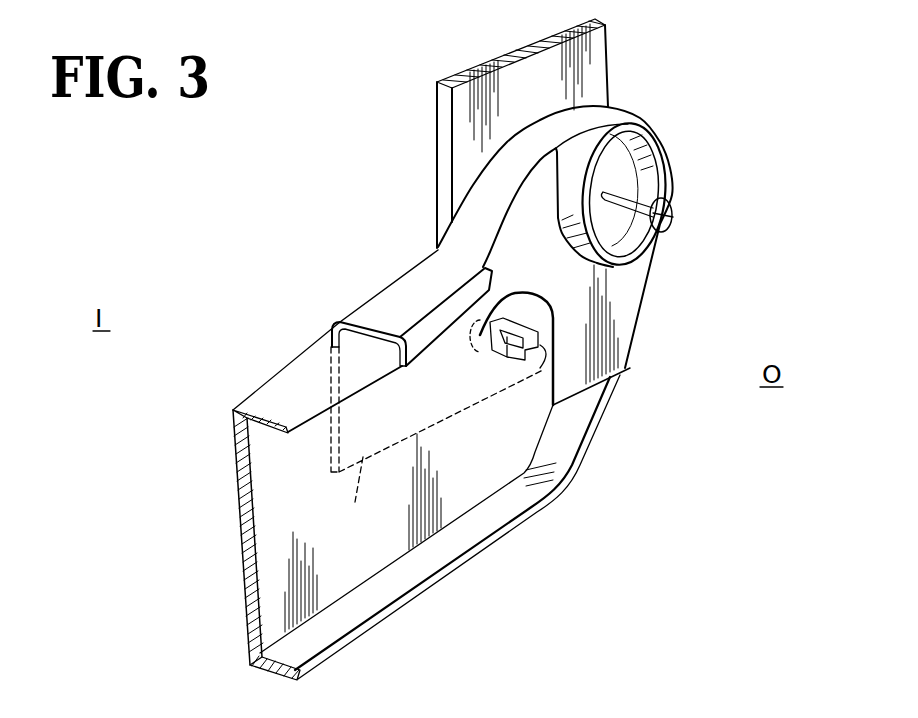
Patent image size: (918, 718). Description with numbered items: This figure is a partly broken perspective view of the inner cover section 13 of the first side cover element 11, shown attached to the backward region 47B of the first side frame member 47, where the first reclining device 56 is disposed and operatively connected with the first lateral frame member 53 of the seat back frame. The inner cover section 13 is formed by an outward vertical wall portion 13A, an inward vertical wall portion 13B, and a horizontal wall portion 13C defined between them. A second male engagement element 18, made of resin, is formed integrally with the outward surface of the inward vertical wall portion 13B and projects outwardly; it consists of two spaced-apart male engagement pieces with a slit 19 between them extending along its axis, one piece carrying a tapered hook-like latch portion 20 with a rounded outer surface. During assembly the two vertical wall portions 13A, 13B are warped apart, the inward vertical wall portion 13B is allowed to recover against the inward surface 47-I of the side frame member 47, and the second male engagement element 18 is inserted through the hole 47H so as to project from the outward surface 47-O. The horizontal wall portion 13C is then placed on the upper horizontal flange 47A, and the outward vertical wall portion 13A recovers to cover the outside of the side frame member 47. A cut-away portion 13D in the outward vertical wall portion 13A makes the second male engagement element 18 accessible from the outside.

The first side cover element 11 is at (535, 392).
The inner cover section 13 is at (535, 392).
The outward vertical wall portion 13A is at (633, 265).
The inward vertical wall portion 13B is at (437, 445).
The horizontal wall portion 13C is at (403, 302).
The cut-away portion 13D is at (556, 370).
The second male engagement element 18 is at (513, 316).
The slit 19 is at (550, 347).
The hook-like latch portion 20 is at (507, 358).
The first side frame member 47 is at (405, 492).
The upper horizontal flange 47A is at (288, 395).
The backward region 47B is at (498, 463).
The hole 47H is at (482, 338).
The inward surface 47-I is at (237, 523).
The outward surface 47-O is at (345, 565).
The first lateral frame member 53 is at (608, 72).
The first reclining device 56 is at (678, 150).